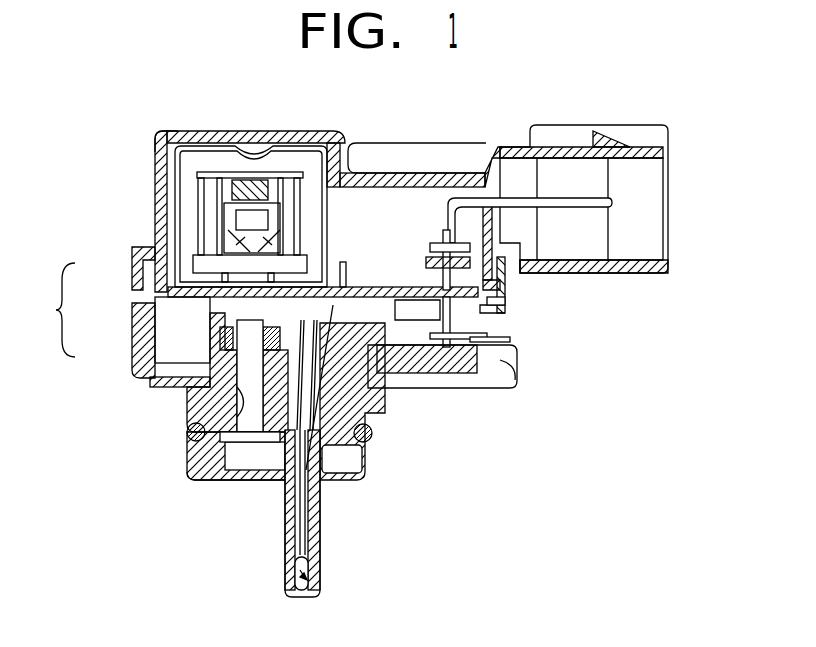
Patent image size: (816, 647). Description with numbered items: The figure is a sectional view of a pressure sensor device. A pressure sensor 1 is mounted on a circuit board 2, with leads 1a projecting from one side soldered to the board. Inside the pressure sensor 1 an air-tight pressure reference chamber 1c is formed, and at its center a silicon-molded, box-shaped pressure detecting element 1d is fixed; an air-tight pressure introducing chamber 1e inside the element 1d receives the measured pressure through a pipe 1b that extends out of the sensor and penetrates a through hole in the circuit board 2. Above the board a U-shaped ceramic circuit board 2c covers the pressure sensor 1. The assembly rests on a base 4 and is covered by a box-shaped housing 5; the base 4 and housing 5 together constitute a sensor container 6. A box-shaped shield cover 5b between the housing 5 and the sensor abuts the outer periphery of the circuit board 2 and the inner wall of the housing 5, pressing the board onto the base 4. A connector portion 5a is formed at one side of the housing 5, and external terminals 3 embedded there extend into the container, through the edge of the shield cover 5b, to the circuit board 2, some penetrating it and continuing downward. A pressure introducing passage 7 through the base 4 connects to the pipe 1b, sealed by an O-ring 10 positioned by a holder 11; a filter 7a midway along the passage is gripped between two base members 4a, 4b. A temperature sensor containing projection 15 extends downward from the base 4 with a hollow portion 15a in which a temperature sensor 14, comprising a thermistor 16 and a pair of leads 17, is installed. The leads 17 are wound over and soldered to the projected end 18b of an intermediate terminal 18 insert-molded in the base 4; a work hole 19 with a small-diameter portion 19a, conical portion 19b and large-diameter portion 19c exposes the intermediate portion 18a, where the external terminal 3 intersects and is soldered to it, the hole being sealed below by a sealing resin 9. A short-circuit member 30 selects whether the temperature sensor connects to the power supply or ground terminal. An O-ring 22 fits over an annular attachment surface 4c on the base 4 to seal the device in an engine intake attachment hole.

The pressure sensor 1 is at (203, 235).
The leads 1a is at (190, 270).
The pipe 1b is at (343, 286).
The pressure reference chamber 1c is at (260, 180).
The pressure detecting element 1d is at (258, 212).
The pressure introducing chamber 1e is at (205, 172).
The circuit board 2 is at (165, 360).
The ceramic circuit board 2c is at (160, 136).
The external terminals 3 is at (583, 204).
The base 4 is at (131, 335).
The member 4a is at (205, 400).
The member 4b is at (195, 452).
The attachment surface 4c is at (387, 432).
The housing 5 is at (130, 278).
The connector portion 5a is at (560, 125).
The shield cover 5b is at (160, 200).
The sensor container 6 is at (55, 310).
The pressure introducing passage 7 is at (230, 450).
The filter 7a is at (255, 442).
The sealing resin 9 is at (455, 345).
The O-ring 10 is at (243, 400).
The holder 11 is at (225, 320).
The temperature sensor 14 is at (312, 577).
The temperature sensor containing projection 15 is at (323, 503).
The hollow portion 15a is at (323, 548).
The thermistor 16 is at (307, 595).
The leads 17 is at (300, 525).
The intermediate terminal 18 is at (420, 337).
The intermediate portion 18a is at (447, 350).
The projected end 18b is at (397, 300).
The work hole 19 is at (485, 365).
The small-diameter portion 19a is at (478, 338).
The conical portion 19b is at (505, 300).
The large-diameter portion 19c is at (510, 368).
The O-ring 22 is at (372, 450).
The short-circuit member 30 is at (353, 290).